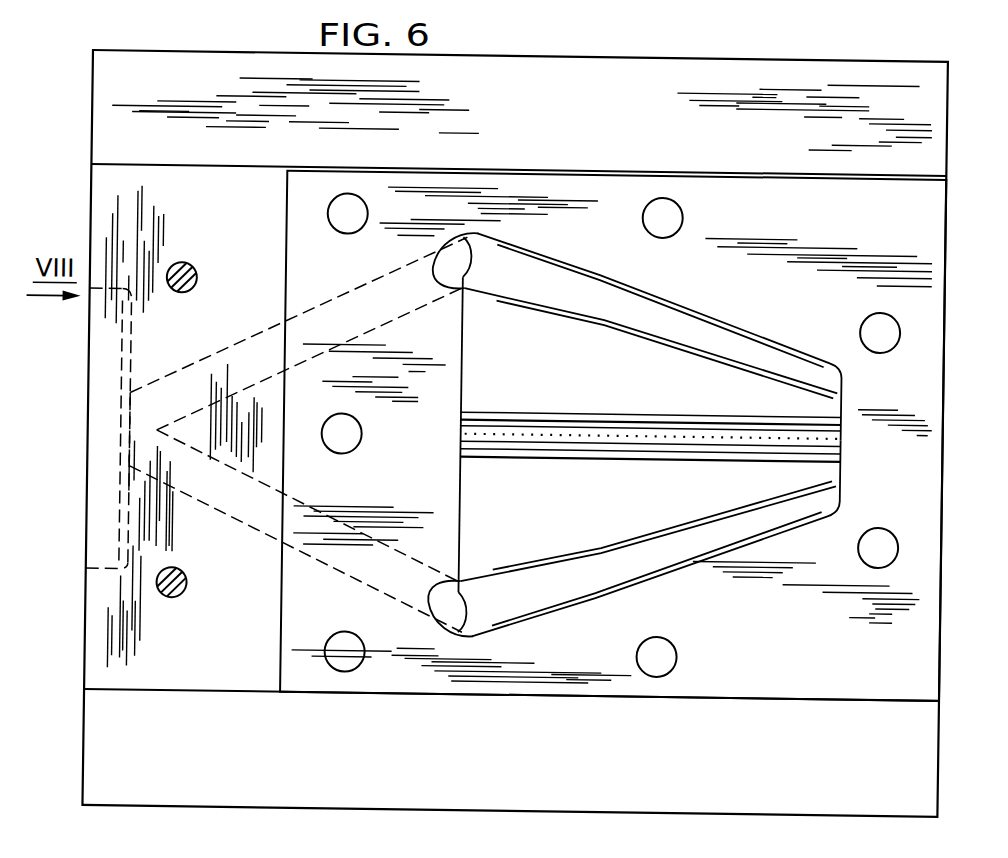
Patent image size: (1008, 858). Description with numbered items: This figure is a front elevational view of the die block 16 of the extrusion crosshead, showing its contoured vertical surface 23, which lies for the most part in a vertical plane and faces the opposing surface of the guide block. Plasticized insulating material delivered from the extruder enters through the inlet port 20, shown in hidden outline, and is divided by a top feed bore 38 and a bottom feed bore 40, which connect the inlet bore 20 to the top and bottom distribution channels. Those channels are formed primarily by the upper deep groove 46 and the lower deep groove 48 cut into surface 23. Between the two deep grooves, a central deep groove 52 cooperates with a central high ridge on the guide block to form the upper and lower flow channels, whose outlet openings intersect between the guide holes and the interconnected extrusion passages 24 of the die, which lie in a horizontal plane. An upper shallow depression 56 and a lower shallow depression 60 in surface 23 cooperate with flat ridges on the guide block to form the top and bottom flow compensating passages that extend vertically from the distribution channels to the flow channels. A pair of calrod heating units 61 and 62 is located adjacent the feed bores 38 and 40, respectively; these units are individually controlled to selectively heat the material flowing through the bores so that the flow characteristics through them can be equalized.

The die block 16 is at (172, 77).
The vertical surface of die block 23 is at (712, 191).
The calrod heating unit 61 is at (196, 269).
The calrod heating unit 62 is at (189, 584).
The inlet port 20 is at (162, 431).
The top feed bore 38 is at (254, 361).
The bottom feed bore 40 is at (263, 501).
The upper deep groove 46 is at (731, 334).
The lower deep groove 48 is at (588, 576).
The central deep groove 52 is at (556, 421).
The extrusion passages 24 is at (535, 431).
The upper shallow depression 56 is at (505, 352).
The lower shallow depression 60 is at (581, 503).